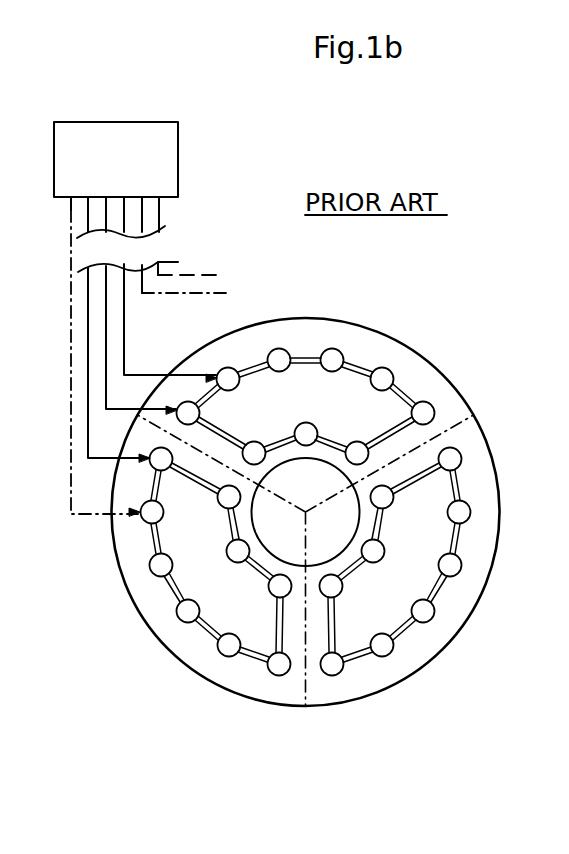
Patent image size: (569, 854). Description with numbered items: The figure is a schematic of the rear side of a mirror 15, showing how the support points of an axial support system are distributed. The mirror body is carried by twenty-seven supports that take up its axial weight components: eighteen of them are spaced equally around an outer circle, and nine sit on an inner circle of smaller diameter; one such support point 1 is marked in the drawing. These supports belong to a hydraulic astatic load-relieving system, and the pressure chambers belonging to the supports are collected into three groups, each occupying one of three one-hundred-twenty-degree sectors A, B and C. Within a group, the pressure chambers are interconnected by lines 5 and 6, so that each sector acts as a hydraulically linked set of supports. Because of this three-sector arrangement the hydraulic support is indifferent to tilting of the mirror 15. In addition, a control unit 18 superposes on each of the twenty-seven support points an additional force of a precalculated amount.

The control unit 18 is at (176, 180).
The mirror 15 is at (447, 630).
The sector A is at (360, 340).
The sector B is at (429, 587).
The sector C is at (183, 648).
The winding conductor 1 is at (455, 567).
The line 5 is at (463, 533).
The line 6 is at (457, 478).